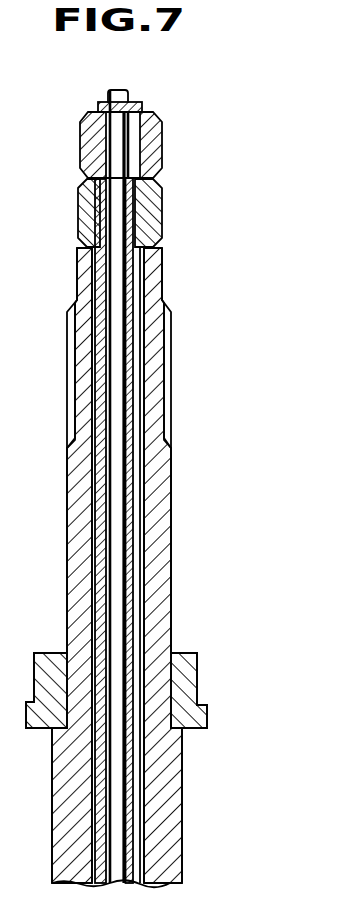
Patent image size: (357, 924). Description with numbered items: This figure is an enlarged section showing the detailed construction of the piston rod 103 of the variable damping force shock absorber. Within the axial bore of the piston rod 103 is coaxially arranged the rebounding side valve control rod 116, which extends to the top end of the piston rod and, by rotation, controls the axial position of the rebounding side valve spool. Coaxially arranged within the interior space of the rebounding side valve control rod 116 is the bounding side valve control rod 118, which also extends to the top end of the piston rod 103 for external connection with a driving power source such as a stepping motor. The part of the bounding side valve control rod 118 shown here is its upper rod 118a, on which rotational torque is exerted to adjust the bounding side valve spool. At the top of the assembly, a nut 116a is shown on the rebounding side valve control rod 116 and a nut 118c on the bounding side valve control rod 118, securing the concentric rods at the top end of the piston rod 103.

The piston rod 103 is at (173, 481).
The rebounding side valve control rod 116 is at (143, 607).
The nut on inner tube 116a is at (88, 225).
The bounding side valve control rod 118 is at (132, 822).
The upper rod 118a is at (117, 303).
The nut on rod 118c is at (150, 142).